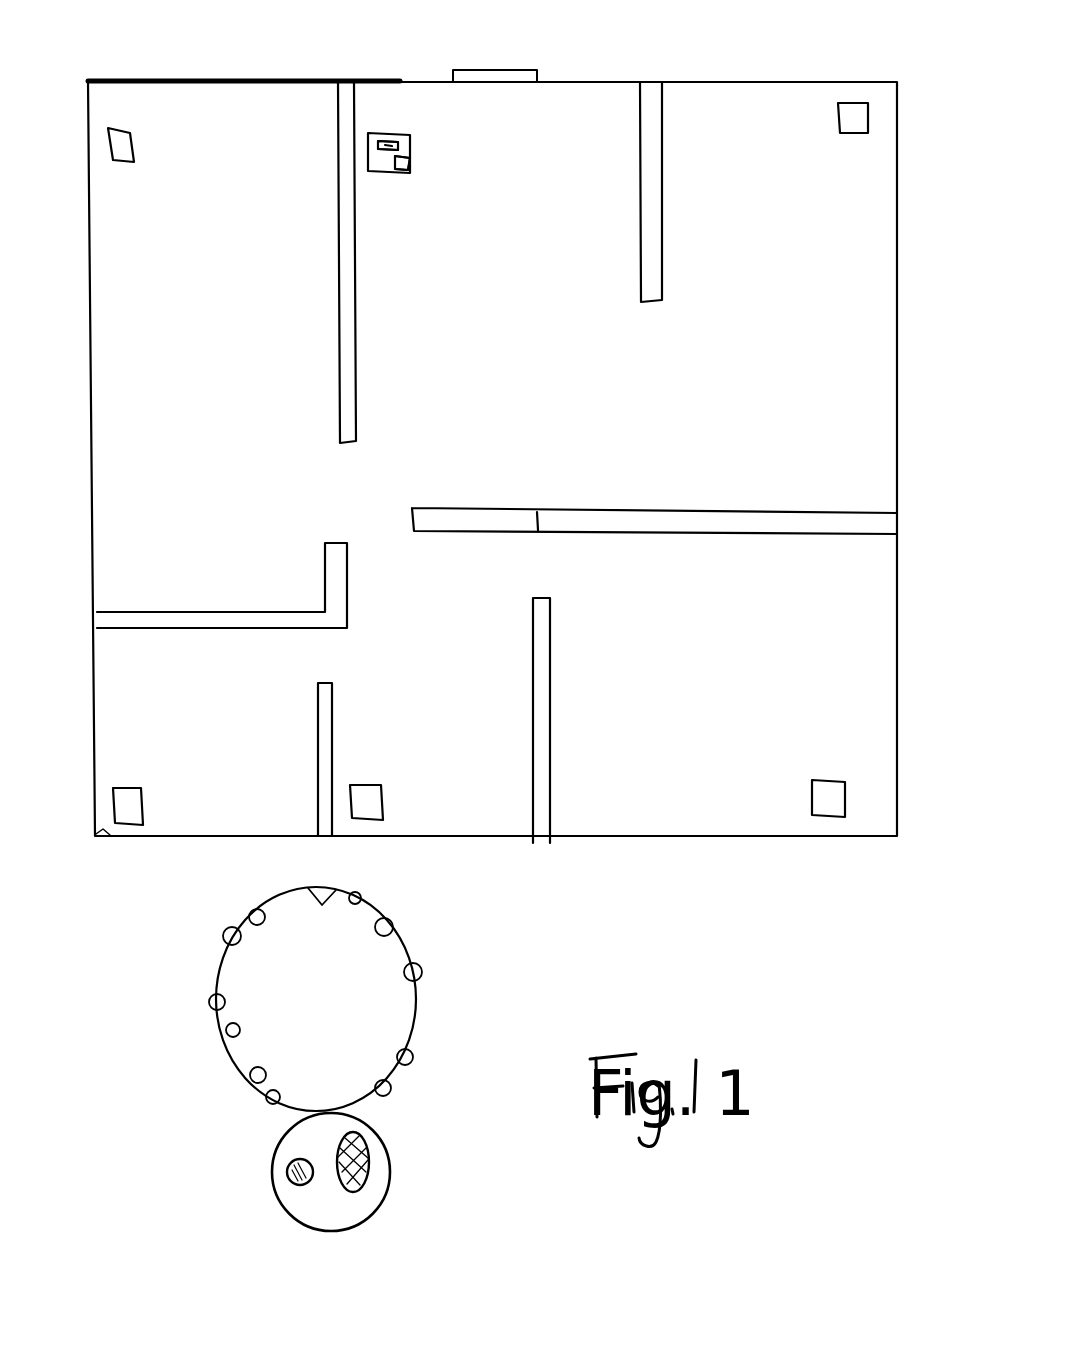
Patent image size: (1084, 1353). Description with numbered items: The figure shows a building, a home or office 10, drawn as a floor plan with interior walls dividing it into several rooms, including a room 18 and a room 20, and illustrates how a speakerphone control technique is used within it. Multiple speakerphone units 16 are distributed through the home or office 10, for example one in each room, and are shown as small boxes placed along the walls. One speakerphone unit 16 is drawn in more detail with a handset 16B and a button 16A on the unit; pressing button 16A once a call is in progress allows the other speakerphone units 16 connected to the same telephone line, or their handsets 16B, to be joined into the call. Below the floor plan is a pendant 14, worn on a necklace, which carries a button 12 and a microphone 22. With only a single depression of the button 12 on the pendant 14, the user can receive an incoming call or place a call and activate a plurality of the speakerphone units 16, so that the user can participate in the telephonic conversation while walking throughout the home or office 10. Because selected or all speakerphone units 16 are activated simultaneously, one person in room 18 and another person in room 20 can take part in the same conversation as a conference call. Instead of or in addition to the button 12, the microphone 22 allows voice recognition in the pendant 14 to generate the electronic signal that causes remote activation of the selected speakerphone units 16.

The home or office 10 is at (702, 852).
The button 12 is at (283, 1178).
The pendant 14 is at (300, 1223).
The speakerphone unit 16 is at (122, 162).
The button on the speakerphone unit 16A is at (408, 160).
The handset 16B is at (390, 141).
The room 18 is at (180, 457).
The room 20 is at (458, 712).
The microphone 22 is at (363, 1190).